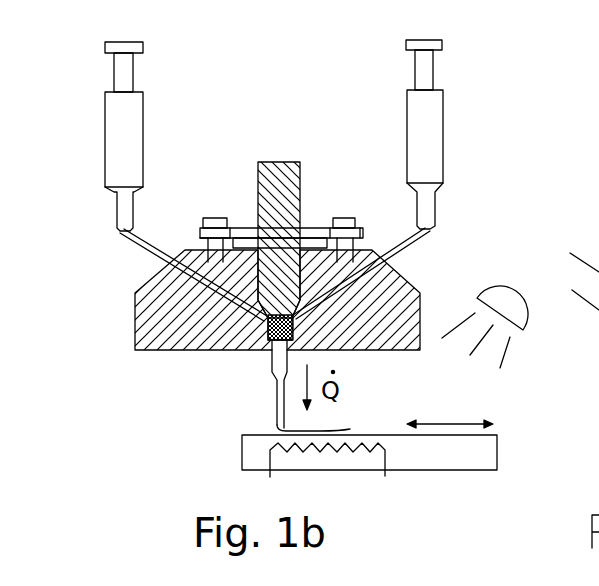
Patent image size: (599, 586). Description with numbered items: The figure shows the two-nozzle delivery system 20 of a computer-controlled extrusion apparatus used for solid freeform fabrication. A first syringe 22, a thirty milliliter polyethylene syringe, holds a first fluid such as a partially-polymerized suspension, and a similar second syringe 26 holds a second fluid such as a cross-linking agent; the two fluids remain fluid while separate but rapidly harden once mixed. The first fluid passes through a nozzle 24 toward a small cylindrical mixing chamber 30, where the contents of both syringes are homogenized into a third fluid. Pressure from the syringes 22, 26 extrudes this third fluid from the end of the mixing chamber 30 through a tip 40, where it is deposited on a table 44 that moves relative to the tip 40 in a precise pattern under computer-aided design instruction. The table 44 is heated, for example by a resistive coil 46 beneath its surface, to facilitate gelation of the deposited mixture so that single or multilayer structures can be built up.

The two-nozzle delivery system 20 is at (492, 67).
The syringe 22 is at (125, 135).
The nozzle 24 is at (262, 318).
The syringe 26 is at (437, 145).
The mixing chamber 30 is at (268, 336).
The tip 40 is at (270, 418).
The table 44 is at (498, 443).
The resistive coil 46 is at (505, 292).